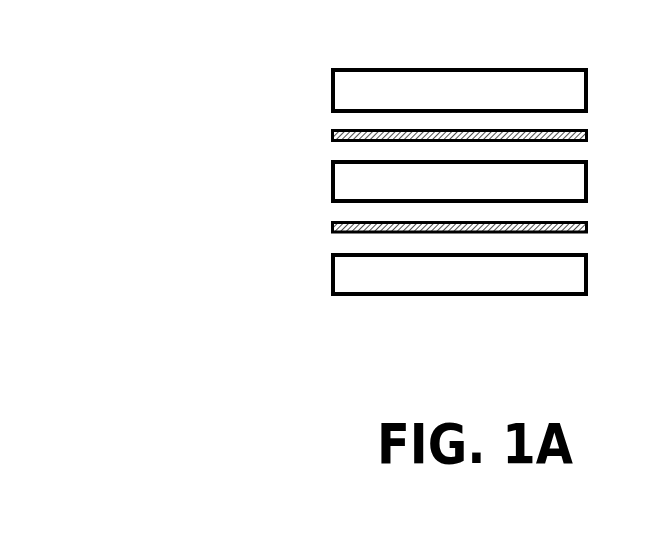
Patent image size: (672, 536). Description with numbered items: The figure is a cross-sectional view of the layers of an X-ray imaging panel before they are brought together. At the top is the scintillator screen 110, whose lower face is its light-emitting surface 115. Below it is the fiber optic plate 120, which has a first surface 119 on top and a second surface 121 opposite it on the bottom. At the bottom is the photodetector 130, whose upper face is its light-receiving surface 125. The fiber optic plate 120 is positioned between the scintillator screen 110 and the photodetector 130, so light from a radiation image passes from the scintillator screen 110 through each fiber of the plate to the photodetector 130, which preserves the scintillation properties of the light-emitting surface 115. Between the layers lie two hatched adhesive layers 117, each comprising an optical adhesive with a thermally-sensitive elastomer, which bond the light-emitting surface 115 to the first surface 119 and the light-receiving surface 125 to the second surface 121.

The scintillator screen 110 is at (590, 88).
The light-emitting surface 115 is at (348, 115).
The adhesive layer 117 is at (590, 135).
The first surface 119 is at (348, 158).
The fiber optic plate 120 is at (590, 185).
The second surface 121 is at (348, 206).
The light-receiving surface 125 is at (348, 250).
The photodetector 130 is at (590, 278).